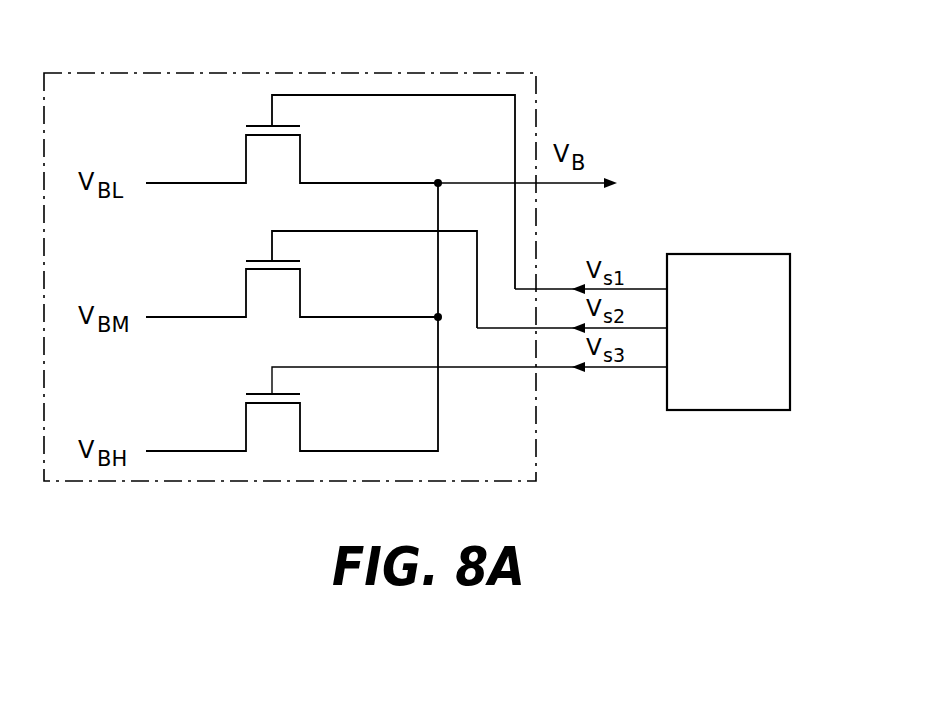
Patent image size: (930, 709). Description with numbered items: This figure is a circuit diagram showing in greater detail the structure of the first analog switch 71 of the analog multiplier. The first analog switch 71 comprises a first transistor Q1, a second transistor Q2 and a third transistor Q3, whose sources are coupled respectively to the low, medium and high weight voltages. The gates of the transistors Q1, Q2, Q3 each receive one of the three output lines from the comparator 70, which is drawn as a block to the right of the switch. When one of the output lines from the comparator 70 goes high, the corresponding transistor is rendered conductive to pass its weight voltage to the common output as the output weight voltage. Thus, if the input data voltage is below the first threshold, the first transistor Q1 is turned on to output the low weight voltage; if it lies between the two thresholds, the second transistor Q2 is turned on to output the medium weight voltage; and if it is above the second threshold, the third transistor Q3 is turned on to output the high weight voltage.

The comparator 70 is at (717, 339).
The first analog switch 71 is at (523, 442).
The first transistor Q1 is at (330, 192).
The second transistor Q2 is at (311, 279).
The third transistor Q3 is at (406, 322).